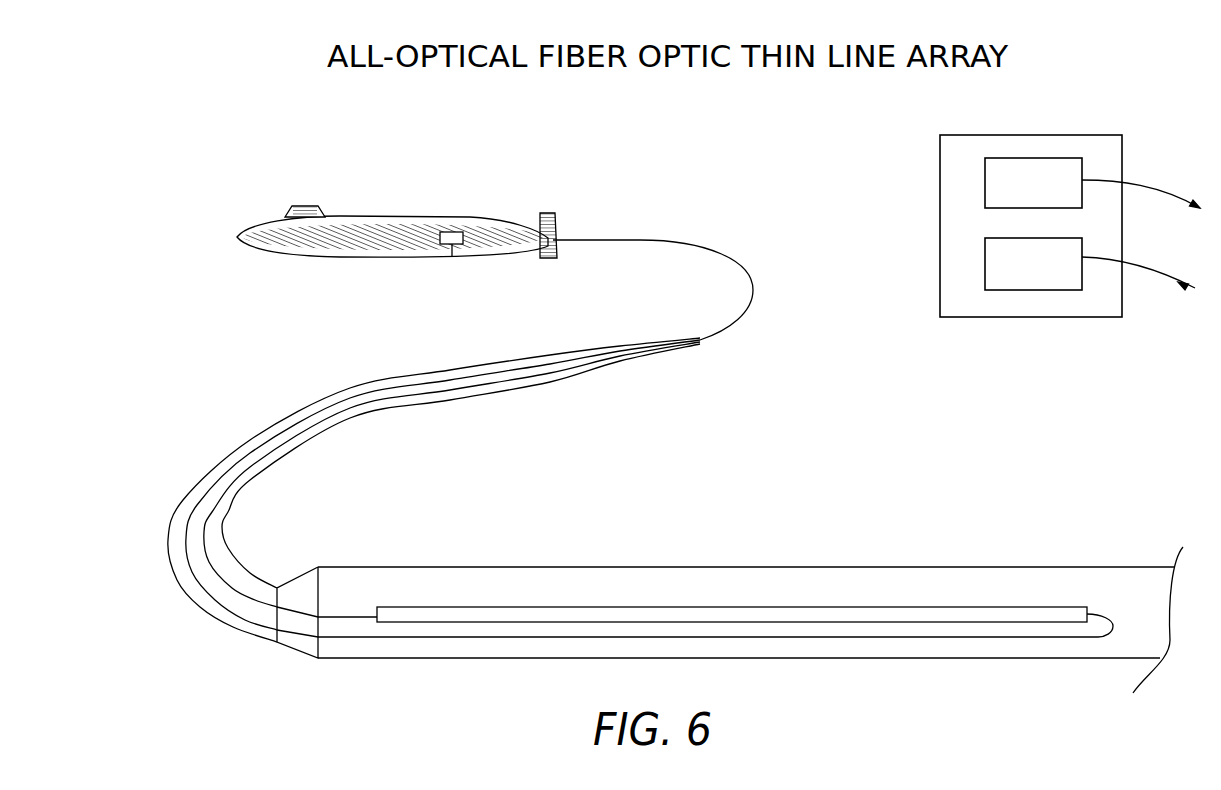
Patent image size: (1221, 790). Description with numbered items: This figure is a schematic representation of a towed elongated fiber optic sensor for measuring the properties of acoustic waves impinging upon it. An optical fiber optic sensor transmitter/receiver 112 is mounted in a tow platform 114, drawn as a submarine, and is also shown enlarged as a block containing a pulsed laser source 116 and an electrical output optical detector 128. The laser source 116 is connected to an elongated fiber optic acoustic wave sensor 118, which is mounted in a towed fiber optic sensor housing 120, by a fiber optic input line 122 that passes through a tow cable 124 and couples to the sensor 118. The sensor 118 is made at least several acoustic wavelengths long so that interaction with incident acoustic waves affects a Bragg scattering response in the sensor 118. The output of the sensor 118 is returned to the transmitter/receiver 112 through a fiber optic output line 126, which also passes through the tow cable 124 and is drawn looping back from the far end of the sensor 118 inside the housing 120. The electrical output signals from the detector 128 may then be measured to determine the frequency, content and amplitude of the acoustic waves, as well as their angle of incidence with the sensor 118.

The optical fiber optic sensor transmitter/receiver 112 is at (454, 231).
The tow platform 114 is at (343, 258).
The pulsed laser source 116 is at (1037, 158).
The elongated fiber optic acoustic wave sensor 118 is at (657, 607).
The towed fiber optic sensor housing 120 is at (934, 567).
The fiber optic input line 122 is at (1153, 190).
The tow cable 124 is at (167, 540).
The fiber optic output line 126 is at (1153, 265).
The electrical output optical detector 128 is at (1030, 290).